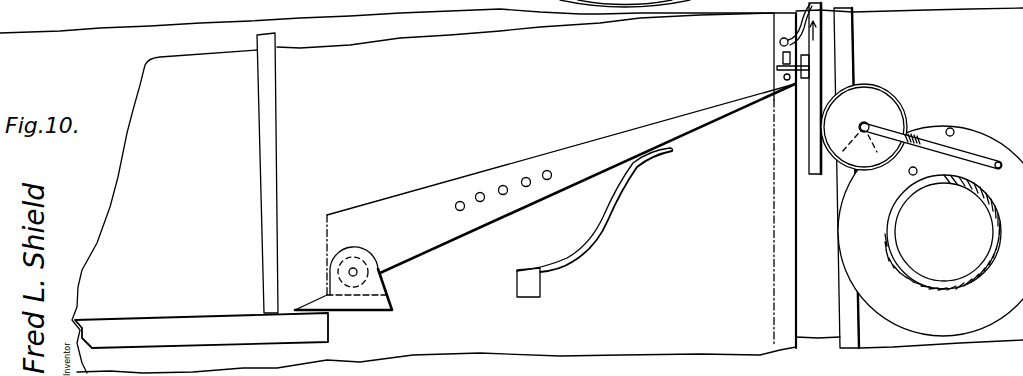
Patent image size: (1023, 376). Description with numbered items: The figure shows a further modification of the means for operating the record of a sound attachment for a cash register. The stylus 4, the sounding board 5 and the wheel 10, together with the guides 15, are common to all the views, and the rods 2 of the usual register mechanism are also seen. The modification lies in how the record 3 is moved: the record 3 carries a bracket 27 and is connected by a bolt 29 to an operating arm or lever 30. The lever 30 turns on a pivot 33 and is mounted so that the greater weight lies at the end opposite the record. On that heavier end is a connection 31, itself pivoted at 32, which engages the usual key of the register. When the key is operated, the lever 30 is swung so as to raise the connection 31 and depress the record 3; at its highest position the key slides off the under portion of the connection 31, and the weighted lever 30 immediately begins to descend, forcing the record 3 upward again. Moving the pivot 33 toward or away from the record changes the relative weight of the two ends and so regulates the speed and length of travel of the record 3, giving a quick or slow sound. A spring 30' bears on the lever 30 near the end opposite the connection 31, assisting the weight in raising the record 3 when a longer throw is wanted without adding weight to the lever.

The rods 2 is at (263, 147).
The record 3 is at (838, 67).
The stylus 4 is at (772, 30).
The sounding board 5 is at (1022, 113).
The wheel 10 is at (896, 106).
The guides 15 is at (847, 33).
The bracket 27 is at (777, 70).
The bolt 29 is at (782, 54).
The operating arm 30 is at (561, 189).
The spring 30' is at (595, 222).
The connection 31 is at (388, 273).
The pivot 32 is at (348, 272).
The pivot 33 is at (503, 186).